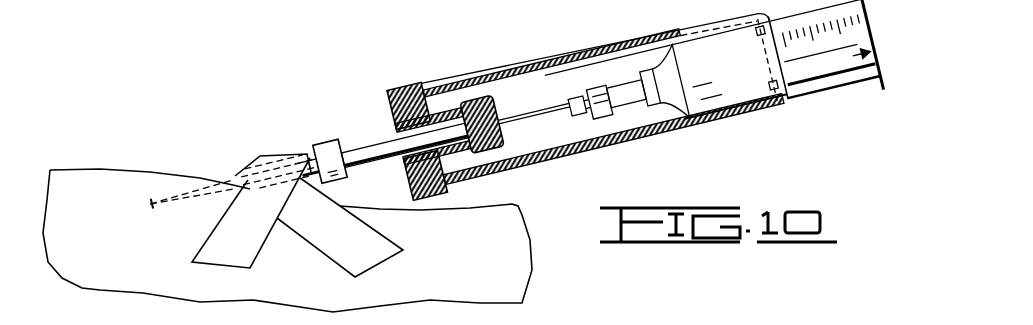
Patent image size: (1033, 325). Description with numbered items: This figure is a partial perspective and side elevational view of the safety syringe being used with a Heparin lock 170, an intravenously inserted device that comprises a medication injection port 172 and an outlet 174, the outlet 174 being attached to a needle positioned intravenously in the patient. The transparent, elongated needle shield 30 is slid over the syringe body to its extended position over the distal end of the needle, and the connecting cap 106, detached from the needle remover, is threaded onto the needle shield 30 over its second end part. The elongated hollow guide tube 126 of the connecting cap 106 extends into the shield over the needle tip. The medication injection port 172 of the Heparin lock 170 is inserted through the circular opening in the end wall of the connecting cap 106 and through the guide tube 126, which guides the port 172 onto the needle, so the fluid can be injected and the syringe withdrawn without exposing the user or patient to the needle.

The needle shield 30 is at (642, 138).
The connecting cap 106 is at (381, 100).
The guide tube 126 is at (452, 117).
The Heparin lock 170 is at (362, 133).
The medication injection port 172 is at (500, 131).
The outlet 174 is at (310, 156).